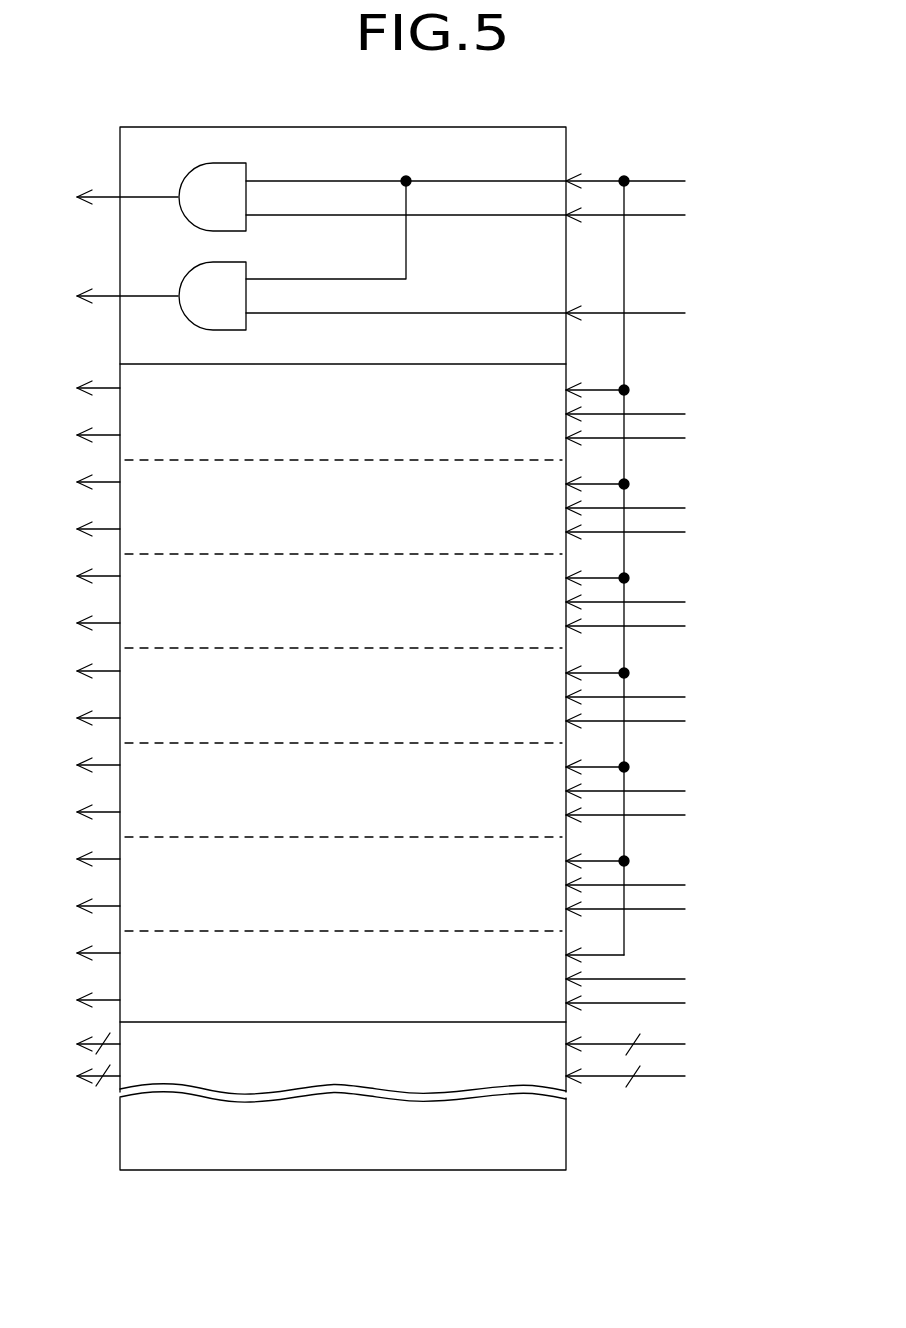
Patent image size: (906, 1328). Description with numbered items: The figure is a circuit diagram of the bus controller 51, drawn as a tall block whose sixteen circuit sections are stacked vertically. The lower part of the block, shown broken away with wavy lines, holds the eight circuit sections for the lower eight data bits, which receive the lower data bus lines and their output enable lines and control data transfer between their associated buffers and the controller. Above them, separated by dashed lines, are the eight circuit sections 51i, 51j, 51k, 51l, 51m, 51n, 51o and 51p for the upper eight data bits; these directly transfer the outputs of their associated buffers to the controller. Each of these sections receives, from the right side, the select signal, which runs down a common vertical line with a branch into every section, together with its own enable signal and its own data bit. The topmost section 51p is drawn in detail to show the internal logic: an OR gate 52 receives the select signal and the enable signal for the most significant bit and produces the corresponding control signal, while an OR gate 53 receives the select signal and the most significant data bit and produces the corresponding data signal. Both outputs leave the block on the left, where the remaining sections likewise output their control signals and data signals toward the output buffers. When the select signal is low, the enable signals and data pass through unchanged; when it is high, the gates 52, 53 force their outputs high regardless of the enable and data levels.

The bus controller 51 is at (343, 1184).
The circuit section 51i is at (566, 939).
The circuit section 51j is at (566, 845).
The circuit section 51k is at (566, 751).
The circuit section 51l is at (566, 657).
The circuit section 51m is at (566, 562).
The circuit section 51n is at (566, 468).
The circuit section 51o is at (566, 374).
The circuit section 51p is at (566, 147).
The OR gate 52 is at (236, 166).
The OR gate 53 is at (236, 266).